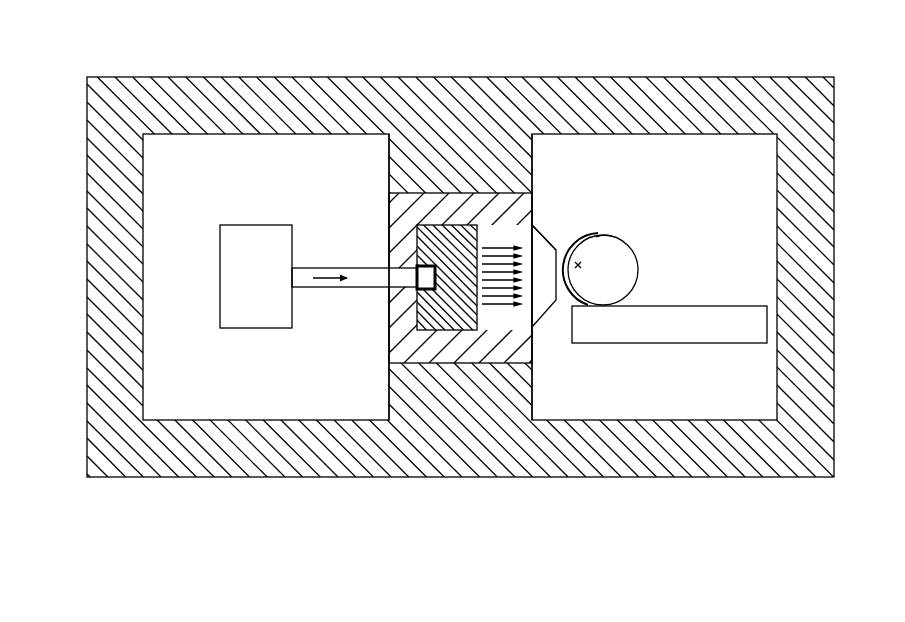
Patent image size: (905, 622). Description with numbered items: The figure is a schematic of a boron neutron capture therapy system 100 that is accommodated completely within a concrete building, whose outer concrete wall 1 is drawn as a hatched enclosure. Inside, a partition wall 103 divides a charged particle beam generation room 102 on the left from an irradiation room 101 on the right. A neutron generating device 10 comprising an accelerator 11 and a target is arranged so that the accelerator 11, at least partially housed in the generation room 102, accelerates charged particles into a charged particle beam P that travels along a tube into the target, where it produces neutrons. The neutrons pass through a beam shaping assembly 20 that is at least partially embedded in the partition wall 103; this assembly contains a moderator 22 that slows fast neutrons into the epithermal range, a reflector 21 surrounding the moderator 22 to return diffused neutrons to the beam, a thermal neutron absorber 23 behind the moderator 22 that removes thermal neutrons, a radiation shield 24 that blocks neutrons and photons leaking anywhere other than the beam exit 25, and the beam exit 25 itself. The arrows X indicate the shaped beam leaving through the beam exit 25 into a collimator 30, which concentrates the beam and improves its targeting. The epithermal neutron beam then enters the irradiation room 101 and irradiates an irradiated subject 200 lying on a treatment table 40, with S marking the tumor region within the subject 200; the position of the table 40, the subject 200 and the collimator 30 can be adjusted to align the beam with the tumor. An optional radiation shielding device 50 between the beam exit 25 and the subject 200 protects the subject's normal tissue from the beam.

The boron neutron capture therapy system 100 is at (146, 36).
The housing 1 is at (85, 304).
The irradiation room 101 is at (712, 185).
The charged particle beam generation room 102 is at (183, 185).
The partition wall 103 is at (386, 157).
The neutron generating device 10 is at (310, 286).
The accelerator 11 is at (232, 308).
The beam shaping assembly 20 is at (383, 222).
The reflector 21 is at (390, 240).
The moderator 22 is at (420, 313).
The thermal neutron absorber 23 is at (477, 317).
The radiation shield 24 is at (533, 205).
The beam exit 25 is at (546, 240).
The collimator 30 is at (541, 298).
The treatment table 40 is at (658, 343).
The radiation shielding device 50 is at (576, 250).
The irradiated subject 200 is at (636, 276).
The charged particle beam P is at (320, 281).
The fluid flow X is at (487, 249).
The surface S is at (610, 238).